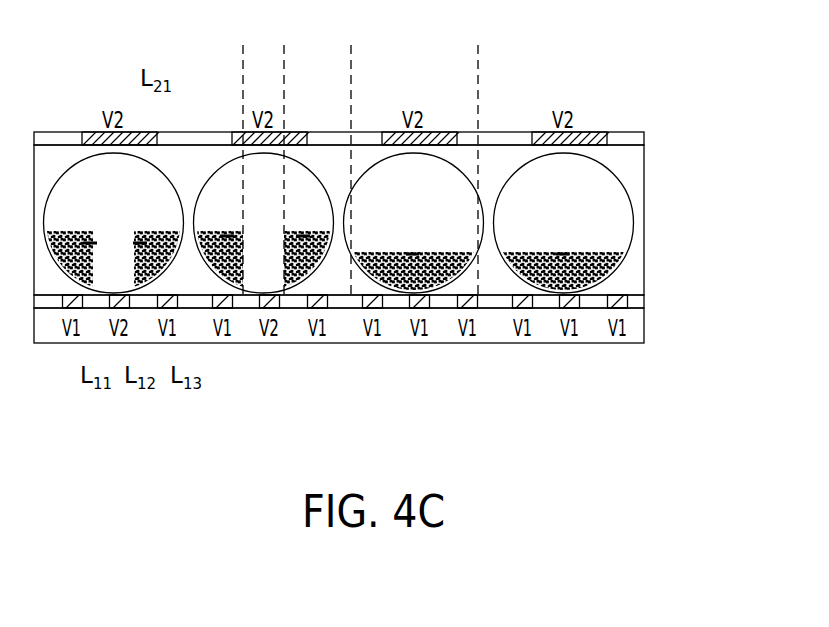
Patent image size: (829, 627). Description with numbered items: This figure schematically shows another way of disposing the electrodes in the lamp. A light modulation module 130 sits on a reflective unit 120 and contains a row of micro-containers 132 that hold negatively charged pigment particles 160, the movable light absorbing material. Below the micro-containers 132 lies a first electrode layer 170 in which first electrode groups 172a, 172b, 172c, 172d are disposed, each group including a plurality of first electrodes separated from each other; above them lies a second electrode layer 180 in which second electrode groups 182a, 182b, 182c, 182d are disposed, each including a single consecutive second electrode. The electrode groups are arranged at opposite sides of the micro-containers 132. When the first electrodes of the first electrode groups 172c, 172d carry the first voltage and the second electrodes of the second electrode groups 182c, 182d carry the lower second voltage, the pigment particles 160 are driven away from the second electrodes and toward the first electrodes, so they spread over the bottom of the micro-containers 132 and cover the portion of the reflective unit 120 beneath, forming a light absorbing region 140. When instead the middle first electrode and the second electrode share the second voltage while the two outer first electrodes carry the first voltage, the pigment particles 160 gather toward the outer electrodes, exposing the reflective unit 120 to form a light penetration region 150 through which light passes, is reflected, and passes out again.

The reflective unit 120 is at (638, 330).
The light modulation module 130 is at (640, 206).
The micro-containers 132 is at (612, 272).
The light absorbing region 140 is at (478, 39).
The light penetration region 150 is at (284, 39).
The pigment particles 160 is at (607, 187).
The first electrode layer 170 is at (638, 303).
The first electrode group 172a is at (83, 308).
The first electrode group 172b is at (228, 308).
The first electrode group 172c is at (378, 308).
The first electrode group 172d is at (530, 308).
The second electrode layer 180 is at (640, 138).
The second electrode group 182a is at (143, 132).
The second electrode group 182b is at (284, 107).
The second electrode group 182c is at (440, 132).
The second electrode group 182d is at (598, 132).